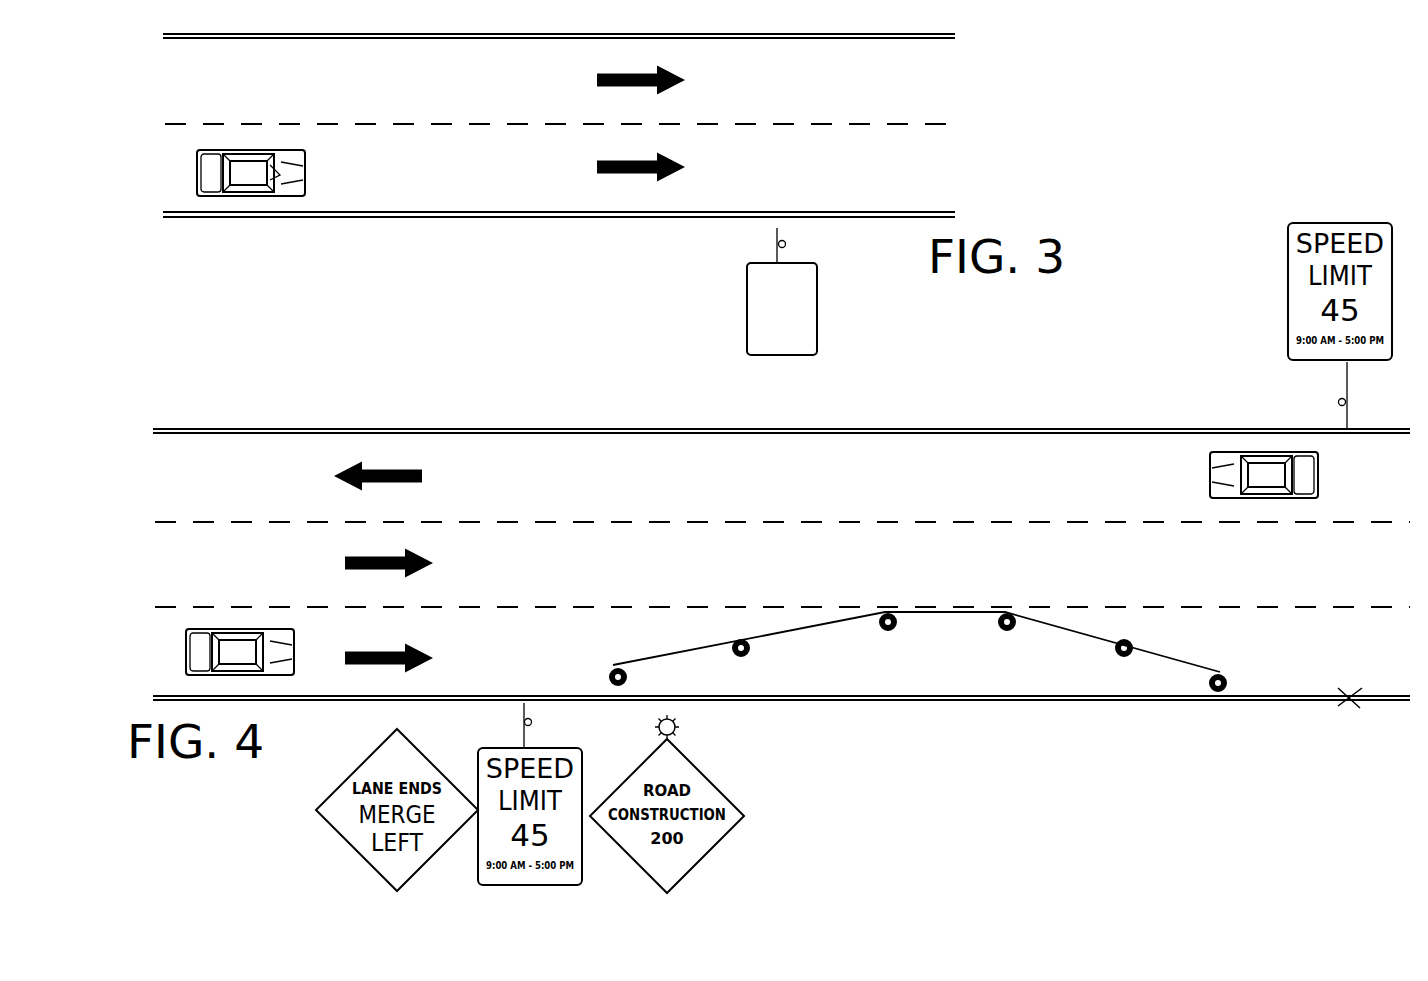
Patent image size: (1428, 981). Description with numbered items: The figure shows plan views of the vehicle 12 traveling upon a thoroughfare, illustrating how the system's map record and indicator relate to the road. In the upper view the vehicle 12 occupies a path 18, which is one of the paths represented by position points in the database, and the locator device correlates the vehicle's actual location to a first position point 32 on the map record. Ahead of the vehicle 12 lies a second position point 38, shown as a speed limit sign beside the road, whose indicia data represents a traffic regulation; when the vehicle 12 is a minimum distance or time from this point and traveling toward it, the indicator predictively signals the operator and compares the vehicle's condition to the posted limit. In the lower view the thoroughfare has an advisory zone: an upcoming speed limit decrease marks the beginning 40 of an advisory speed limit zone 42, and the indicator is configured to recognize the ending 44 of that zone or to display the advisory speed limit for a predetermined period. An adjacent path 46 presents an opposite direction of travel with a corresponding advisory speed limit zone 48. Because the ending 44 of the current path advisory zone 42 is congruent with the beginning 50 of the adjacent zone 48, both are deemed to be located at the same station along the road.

In FIG. 3, the vehicle 12 is at (239, 150).
In FIG. 4, the vehicle 12 is at (209, 627).
In FIG. 3, the first position point 32 is at (277, 177).
In FIG. 3, the path 18 is at (527, 182).
In FIG. 3, the second position point 38 is at (776, 212).
In FIG. 4, the adjacent path 46 is at (277, 424).
In FIG. 4, the beginning of advisory speed limit zone 40 is at (515, 720).
In FIG. 4, the adjacent advisory speed limit zone 48 is at (840, 489).
In FIG. 4, the advisory speed limit zone 42 is at (840, 575).
In FIG. 4, the ending of advisory speed limit zone 44 is at (1350, 704).
In FIG. 4, the beginning of adjacent advisory zone 50 is at (1347, 396).